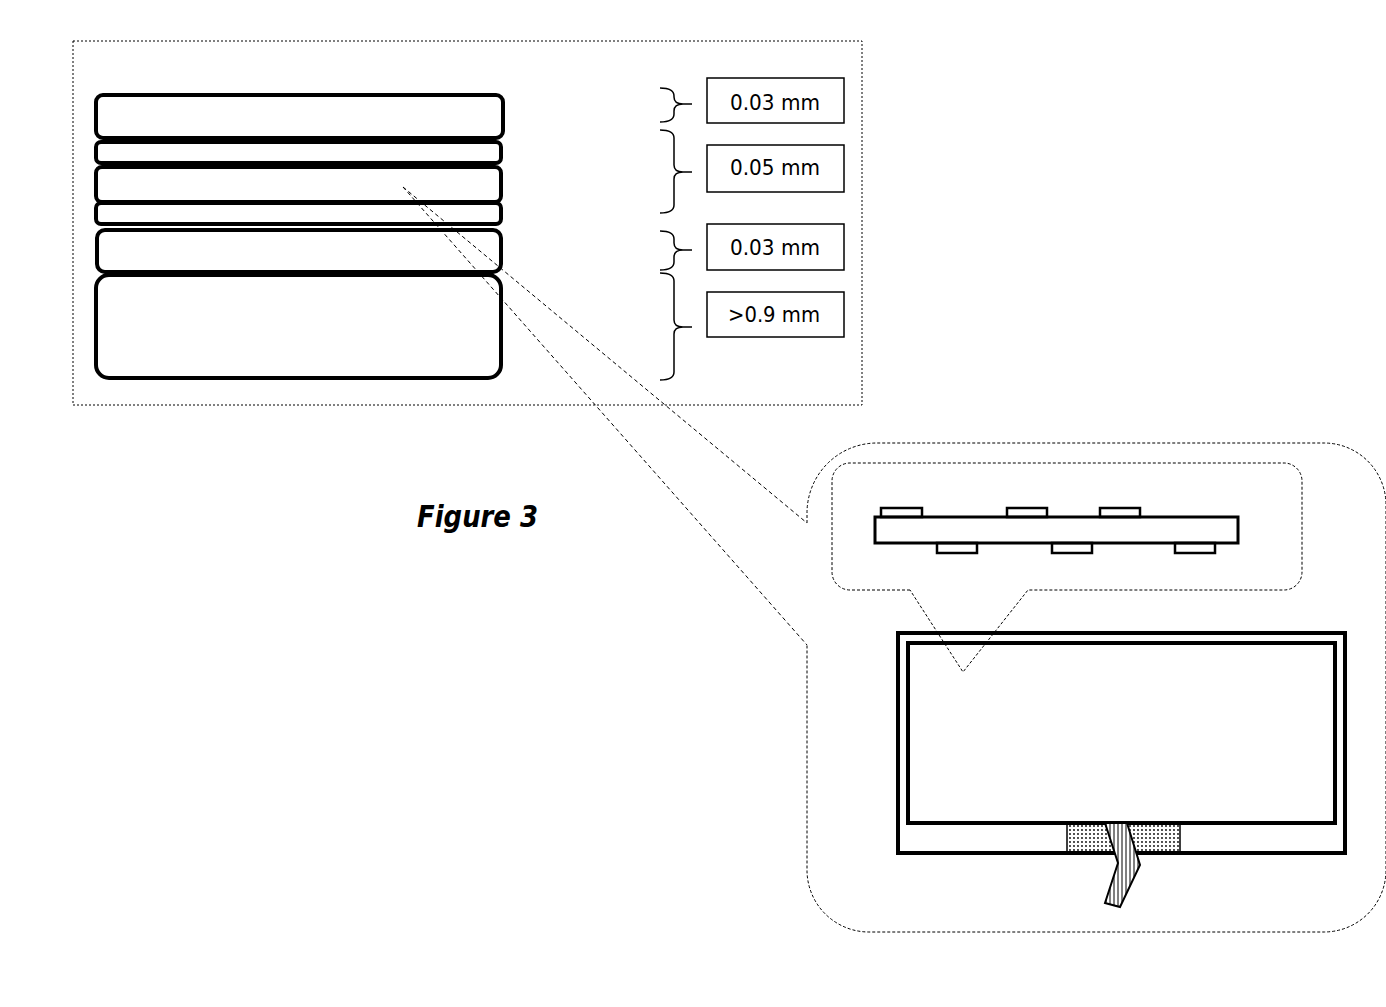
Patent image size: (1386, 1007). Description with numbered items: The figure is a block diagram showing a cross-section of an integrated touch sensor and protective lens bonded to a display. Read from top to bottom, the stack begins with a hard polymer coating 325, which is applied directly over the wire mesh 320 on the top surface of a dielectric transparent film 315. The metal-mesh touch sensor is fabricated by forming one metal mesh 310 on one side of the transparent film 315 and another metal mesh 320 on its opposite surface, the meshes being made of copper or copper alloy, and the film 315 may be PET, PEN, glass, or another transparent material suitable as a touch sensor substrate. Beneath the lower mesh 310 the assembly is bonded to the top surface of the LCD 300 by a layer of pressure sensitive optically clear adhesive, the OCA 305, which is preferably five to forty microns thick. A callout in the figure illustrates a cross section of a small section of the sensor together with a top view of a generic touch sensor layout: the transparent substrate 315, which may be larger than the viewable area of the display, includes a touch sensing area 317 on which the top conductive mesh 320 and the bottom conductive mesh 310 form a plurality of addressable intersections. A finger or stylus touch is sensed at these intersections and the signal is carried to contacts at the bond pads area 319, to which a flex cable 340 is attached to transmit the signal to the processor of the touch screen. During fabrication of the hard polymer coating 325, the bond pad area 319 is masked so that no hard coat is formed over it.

The LCD 300 is at (338, 340).
The OCA 305 is at (342, 267).
The metal mesh 310 is at (480, 213).
The transparent film 315 is at (340, 200).
The touch sensing area 317 is at (1133, 736).
The bond pads area 319 is at (1082, 857).
The metal mesh 320 is at (508, 139).
The hard polymer coating 325 is at (432, 129).
The flex cable 340 is at (1103, 907).